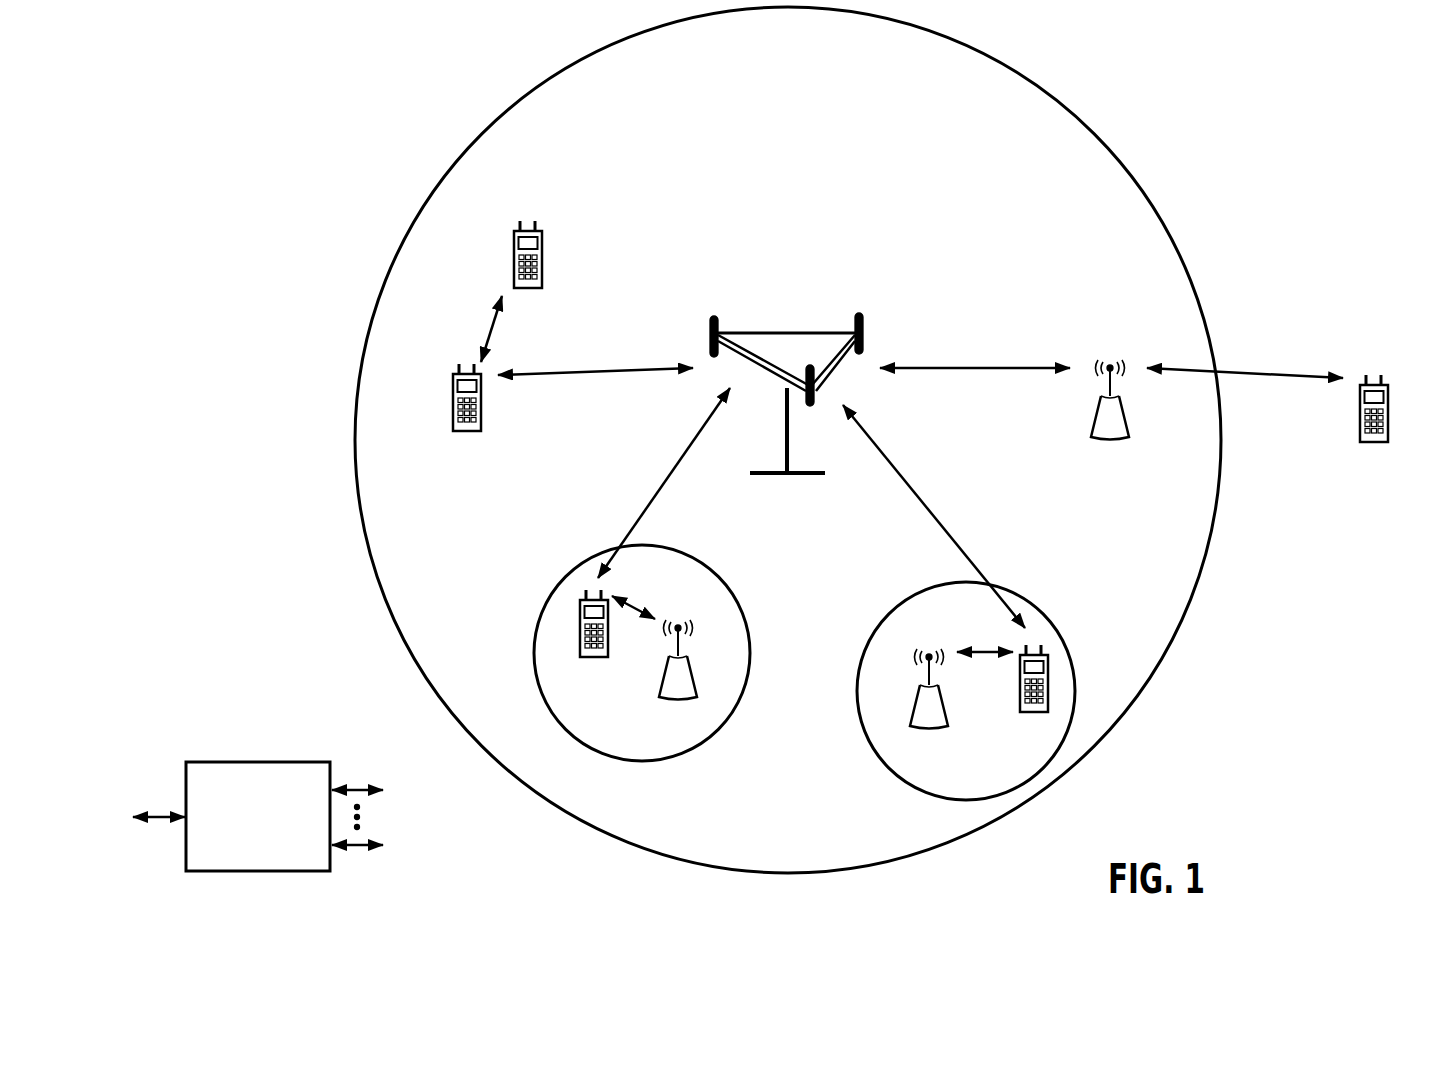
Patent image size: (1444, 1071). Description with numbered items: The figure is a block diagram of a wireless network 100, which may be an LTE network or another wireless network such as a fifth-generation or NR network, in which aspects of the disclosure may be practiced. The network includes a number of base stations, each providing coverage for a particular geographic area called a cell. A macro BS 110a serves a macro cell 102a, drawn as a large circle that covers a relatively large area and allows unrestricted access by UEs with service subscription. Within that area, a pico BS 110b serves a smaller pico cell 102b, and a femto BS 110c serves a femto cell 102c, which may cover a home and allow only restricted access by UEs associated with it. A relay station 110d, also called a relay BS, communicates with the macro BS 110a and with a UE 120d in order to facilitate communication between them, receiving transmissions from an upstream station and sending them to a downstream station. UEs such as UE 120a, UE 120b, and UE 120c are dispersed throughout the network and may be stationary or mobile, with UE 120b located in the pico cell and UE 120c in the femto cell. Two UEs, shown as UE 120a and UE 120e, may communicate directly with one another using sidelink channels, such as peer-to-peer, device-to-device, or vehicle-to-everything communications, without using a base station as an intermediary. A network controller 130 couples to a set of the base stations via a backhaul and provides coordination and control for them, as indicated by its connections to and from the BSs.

The wireless network 100 is at (1272, 98).
The macro cell 102a is at (1088, 100).
The pico cell 102b is at (740, 567).
The femto cell 102c is at (885, 617).
The macro BS 110a is at (783, 332).
The pico BS 110b is at (710, 673).
The femto BS 110c is at (915, 709).
The relay station 110d is at (1111, 362).
The UE 120a is at (453, 384).
The UE 120b is at (580, 647).
The UE 120c is at (1020, 698).
The UE 120d is at (1402, 385).
The UE 120e is at (514, 243).
The network controller 130 is at (266, 748).